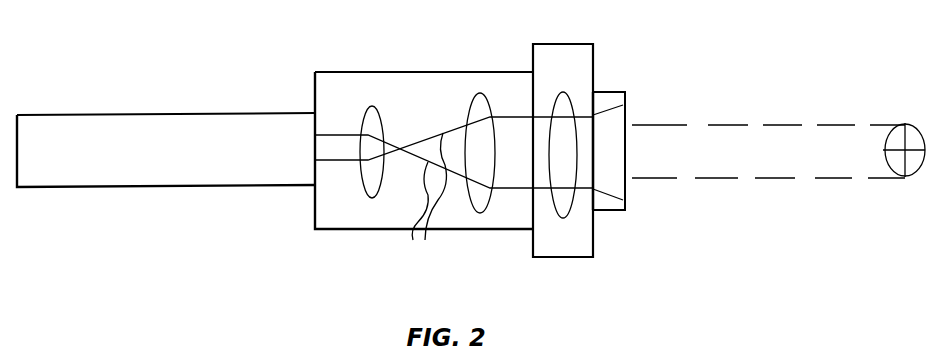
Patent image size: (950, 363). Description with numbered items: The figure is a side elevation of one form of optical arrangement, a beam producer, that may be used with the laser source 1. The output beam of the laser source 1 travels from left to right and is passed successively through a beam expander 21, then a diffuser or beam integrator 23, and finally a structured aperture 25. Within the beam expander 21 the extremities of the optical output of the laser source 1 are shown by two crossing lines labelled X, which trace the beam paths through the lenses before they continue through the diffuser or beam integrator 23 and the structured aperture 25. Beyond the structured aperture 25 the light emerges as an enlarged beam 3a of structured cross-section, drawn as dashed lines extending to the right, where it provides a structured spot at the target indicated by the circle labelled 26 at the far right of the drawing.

The laser source 1 is at (222, 167).
The beam expander 21 is at (451, 83).
The diffuser or beam integrator 23 is at (566, 54).
The structured aperture 25 is at (625, 205).
The target / illuminated spot 26 is at (906, 122).
The enlarged beam 3a is at (767, 179).